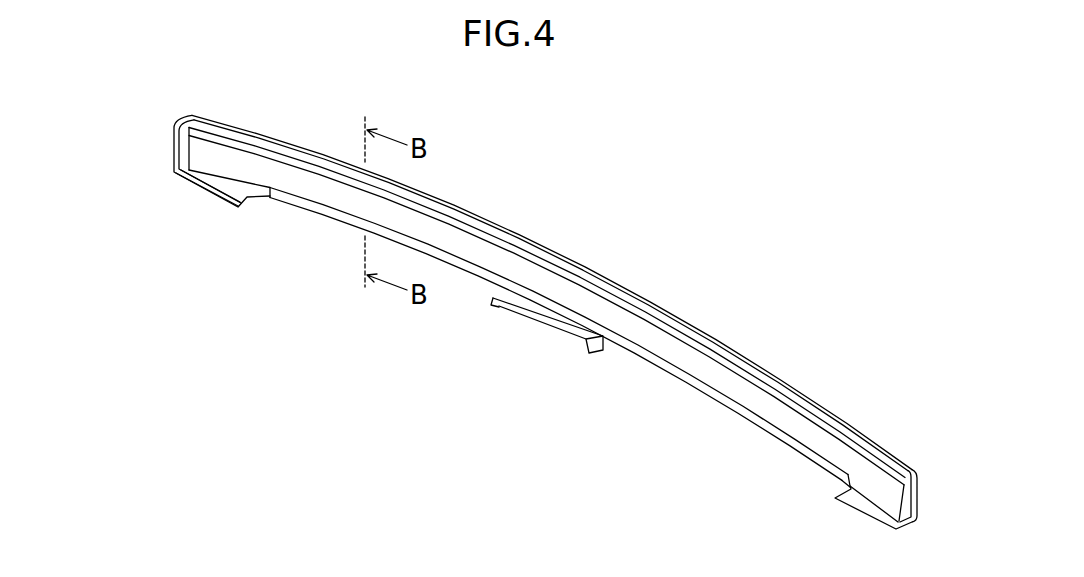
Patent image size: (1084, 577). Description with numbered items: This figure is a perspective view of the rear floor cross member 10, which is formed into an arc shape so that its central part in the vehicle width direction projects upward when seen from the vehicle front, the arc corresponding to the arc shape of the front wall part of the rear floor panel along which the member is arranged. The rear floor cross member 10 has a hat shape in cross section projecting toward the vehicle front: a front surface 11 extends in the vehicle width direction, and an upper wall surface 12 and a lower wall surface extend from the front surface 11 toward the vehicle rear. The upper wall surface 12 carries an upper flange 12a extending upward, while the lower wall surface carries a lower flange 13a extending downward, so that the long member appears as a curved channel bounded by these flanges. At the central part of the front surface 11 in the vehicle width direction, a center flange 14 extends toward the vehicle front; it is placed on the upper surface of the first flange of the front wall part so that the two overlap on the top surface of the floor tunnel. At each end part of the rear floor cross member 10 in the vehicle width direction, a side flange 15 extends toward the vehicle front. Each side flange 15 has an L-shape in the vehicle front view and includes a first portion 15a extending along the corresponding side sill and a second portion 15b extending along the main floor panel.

The rear floor cross member 10 is at (511, 218).
The front surface 11 is at (496, 263).
The upper wall surface 12 is at (288, 162).
The upper flange 12a is at (236, 128).
The lower flange 13a is at (306, 203).
The center flange 14 is at (563, 322).
The side flange 15 is at (177, 158).
The first portion 15a is at (176, 140).
The second portion 15b is at (208, 187).